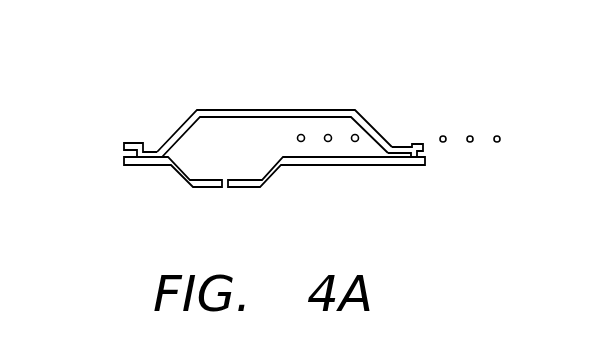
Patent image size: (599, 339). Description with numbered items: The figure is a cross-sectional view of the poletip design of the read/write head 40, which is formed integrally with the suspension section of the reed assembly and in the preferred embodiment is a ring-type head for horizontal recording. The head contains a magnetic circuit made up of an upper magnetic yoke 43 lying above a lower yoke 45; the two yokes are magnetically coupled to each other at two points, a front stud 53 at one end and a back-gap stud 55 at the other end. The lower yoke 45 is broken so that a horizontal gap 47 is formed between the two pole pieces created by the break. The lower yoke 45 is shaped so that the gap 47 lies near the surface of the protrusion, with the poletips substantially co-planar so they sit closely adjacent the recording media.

The read/write head 40 is at (122, 46).
The upper magnetic yoke 43 is at (202, 86).
The lower yoke 45 is at (172, 176).
The horizontal gap 47 is at (227, 188).
The front stud 53 is at (141, 143).
The back-gap stud 55 is at (412, 116).